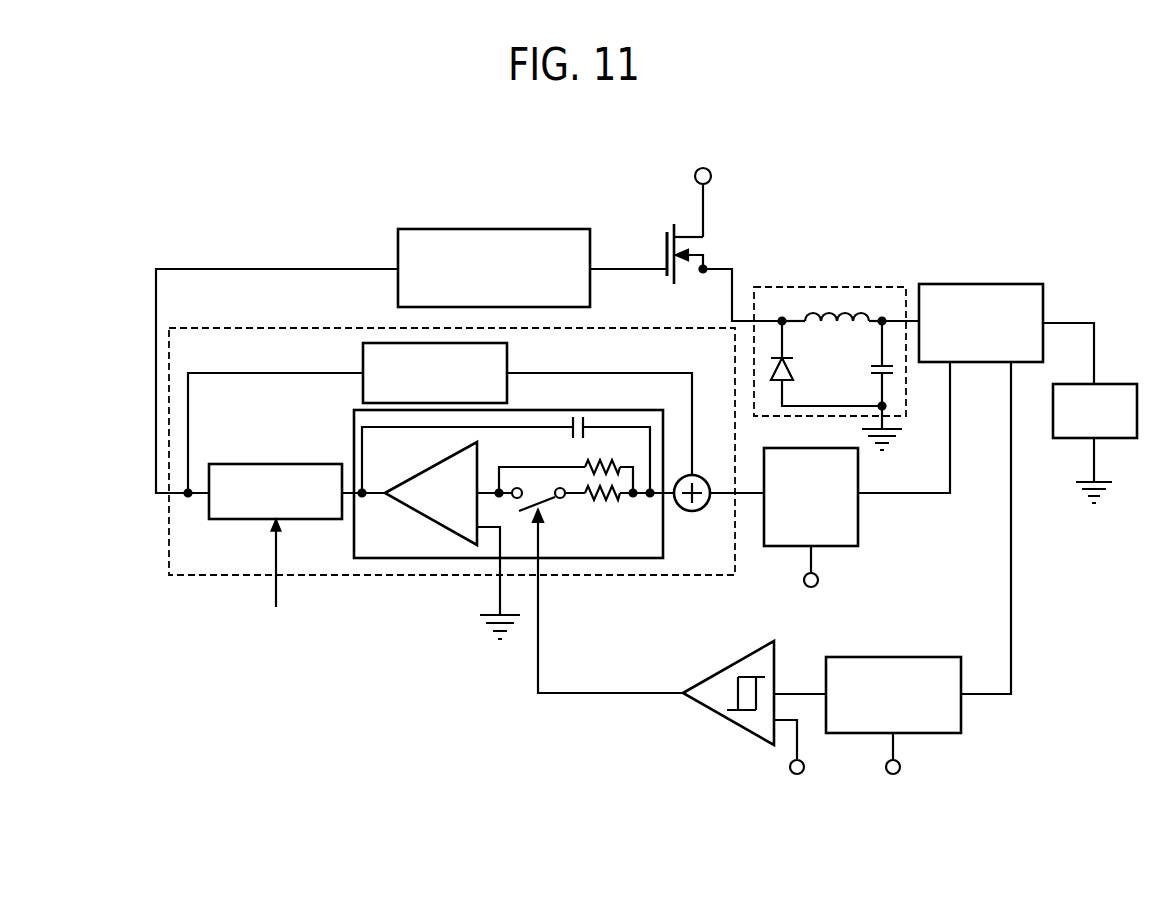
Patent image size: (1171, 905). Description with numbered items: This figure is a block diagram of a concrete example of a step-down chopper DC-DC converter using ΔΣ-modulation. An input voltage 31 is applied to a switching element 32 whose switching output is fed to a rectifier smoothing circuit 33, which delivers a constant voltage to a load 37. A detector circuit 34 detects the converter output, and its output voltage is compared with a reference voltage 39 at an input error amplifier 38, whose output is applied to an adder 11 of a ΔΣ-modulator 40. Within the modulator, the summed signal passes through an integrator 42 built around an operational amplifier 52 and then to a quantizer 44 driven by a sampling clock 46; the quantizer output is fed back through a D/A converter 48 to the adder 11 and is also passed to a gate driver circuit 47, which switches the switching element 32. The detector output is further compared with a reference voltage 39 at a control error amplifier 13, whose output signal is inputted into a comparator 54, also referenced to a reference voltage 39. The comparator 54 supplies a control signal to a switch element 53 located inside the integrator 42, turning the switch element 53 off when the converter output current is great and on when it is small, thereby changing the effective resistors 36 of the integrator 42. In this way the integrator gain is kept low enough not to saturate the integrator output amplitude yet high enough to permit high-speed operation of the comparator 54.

The adder 11 is at (615, 470).
The control error amplifier 13 is at (910, 677).
The input voltage 31 is at (761, 185).
The switching element 32 is at (729, 254).
The rectifier smoothing circuit 33 is at (866, 287).
The detector circuit 34 is at (1016, 321).
The resistors 36 is at (616, 509).
The load 37 is at (1109, 417).
The input error amplifier 38 is at (841, 497).
The reference voltage 39 is at (885, 689).
The ΔΣ-modulator 40 is at (452, 458).
The integrator 42 is at (508, 524).
The quantizer 44 is at (275, 460).
The sampling clock 46 is at (276, 596).
The gate driver circuit 47 is at (494, 246).
The D/A converter 48 is at (471, 371).
The operational amplifier 52 is at (426, 497).
The switch element 53 is at (548, 523).
The comparator 54 is at (723, 701).